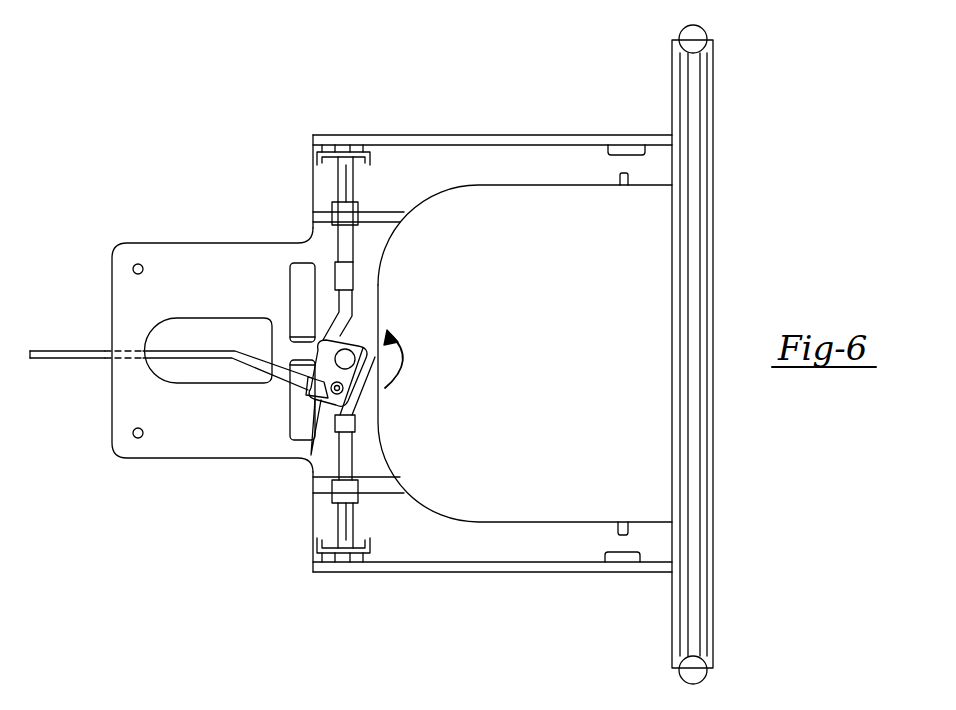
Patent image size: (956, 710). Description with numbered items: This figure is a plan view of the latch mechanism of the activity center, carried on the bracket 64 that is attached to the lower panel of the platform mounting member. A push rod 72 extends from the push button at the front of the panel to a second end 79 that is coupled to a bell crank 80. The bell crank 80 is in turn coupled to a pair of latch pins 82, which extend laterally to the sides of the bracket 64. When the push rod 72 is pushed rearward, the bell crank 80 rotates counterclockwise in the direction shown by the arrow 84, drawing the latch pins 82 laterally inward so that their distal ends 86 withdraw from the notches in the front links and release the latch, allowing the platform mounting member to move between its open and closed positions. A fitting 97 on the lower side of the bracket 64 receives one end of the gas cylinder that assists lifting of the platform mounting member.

The bracket 64 is at (492, 126).
The push rod 72 is at (74, 362).
The second end 79 is at (305, 462).
The bell crank 80 is at (364, 340).
The latch pins 82 is at (345, 182).
The arrow 84 is at (403, 362).
The distal ends 86 is at (344, 150).
The fitting 97 is at (303, 340).